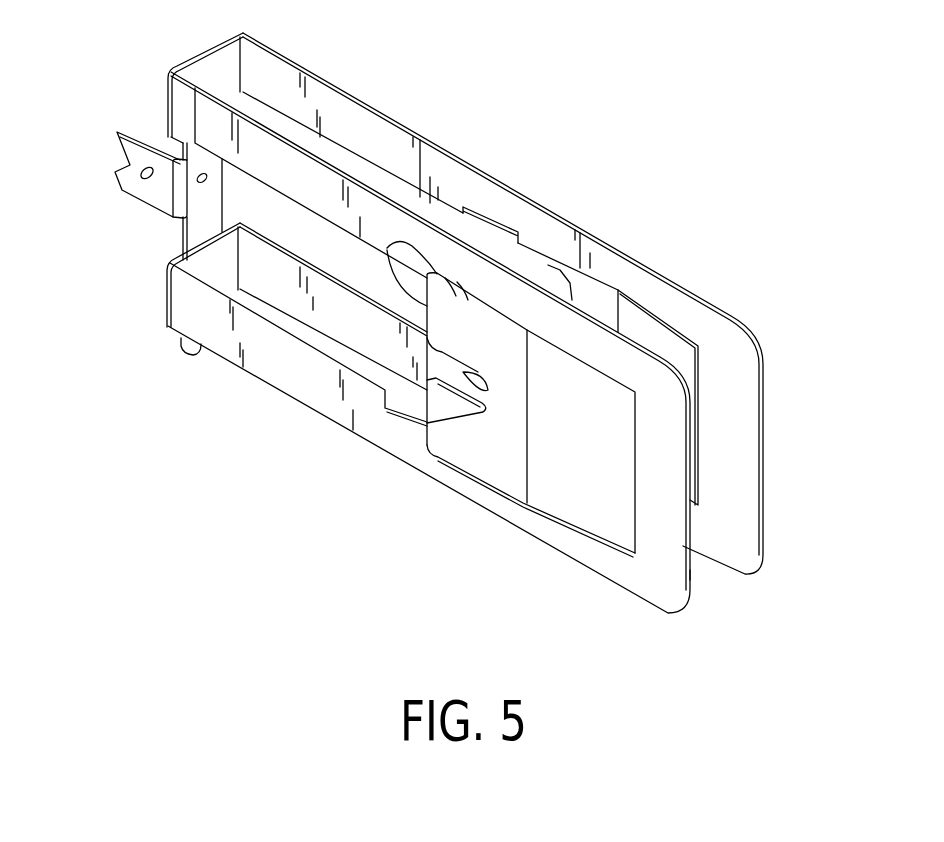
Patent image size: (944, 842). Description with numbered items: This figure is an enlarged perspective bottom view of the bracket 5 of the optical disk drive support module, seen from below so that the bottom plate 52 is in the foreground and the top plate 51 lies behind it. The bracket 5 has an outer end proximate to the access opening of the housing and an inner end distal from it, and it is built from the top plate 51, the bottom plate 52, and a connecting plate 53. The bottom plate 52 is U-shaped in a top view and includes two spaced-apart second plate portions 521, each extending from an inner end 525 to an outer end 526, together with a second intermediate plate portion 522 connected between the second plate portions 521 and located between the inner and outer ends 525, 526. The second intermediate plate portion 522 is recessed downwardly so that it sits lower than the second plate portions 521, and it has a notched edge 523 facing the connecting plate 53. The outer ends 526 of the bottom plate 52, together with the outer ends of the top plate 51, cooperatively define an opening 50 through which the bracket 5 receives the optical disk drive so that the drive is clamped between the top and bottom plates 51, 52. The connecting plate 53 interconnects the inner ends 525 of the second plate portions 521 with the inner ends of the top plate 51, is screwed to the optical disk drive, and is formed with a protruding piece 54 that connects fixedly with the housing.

The bracket 5 is at (526, 126).
The opening 50 is at (752, 453).
The top plate 51 is at (750, 306).
The bottom plate 52 is at (702, 628).
The second plate portions 521 is at (310, 173).
The second intermediate plate portion 522 is at (500, 345).
The notched edge 523 is at (485, 388).
The inner end 525 is at (163, 303).
The outer end 526 is at (690, 575).
The connecting plate 53 is at (182, 237).
The protruding piece 54 is at (137, 178).